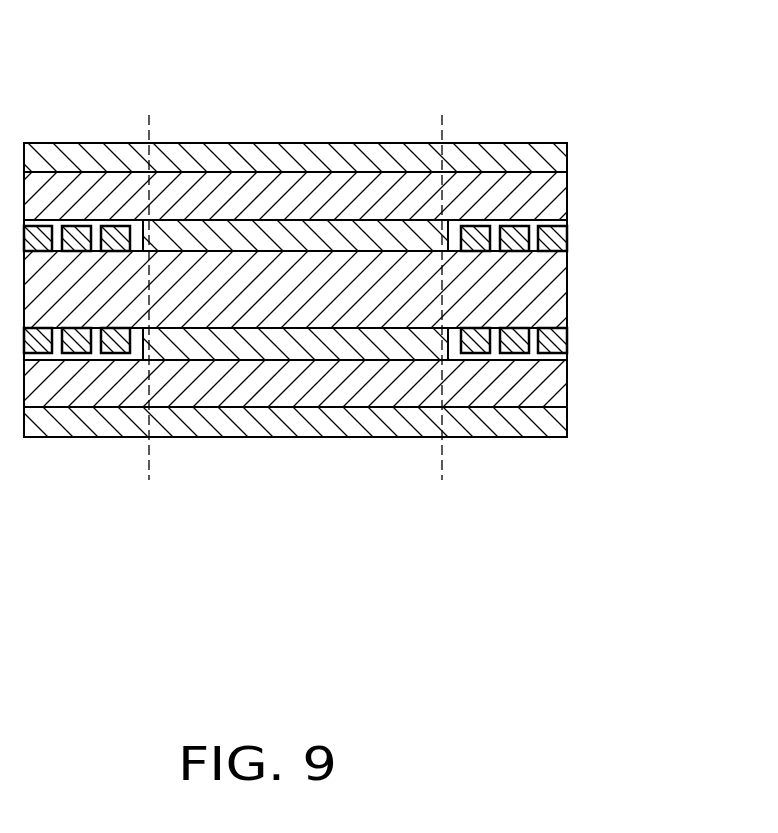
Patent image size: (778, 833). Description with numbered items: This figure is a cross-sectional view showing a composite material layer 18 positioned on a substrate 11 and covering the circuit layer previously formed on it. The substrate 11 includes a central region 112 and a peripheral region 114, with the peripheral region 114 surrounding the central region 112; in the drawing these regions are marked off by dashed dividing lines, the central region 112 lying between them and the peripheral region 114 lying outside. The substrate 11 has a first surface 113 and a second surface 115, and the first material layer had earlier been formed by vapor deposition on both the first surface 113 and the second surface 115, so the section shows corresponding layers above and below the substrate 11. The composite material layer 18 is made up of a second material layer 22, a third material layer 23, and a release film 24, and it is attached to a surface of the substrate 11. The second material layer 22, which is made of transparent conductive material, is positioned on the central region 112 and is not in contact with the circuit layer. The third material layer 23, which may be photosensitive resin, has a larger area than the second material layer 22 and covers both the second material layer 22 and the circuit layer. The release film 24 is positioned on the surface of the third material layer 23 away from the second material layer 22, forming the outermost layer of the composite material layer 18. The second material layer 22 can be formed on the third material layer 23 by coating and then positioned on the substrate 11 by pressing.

The central region 112 is at (309, 70).
The peripheral region 114 is at (532, 72).
The composite material layer 18 is at (358, 178).
The second material layer 22 is at (407, 237).
The release film 24 is at (550, 159).
The third material layer 23 is at (557, 198).
The first surface 113 is at (538, 249).
The substrate 11 is at (550, 283).
The second surface 115 is at (478, 328).